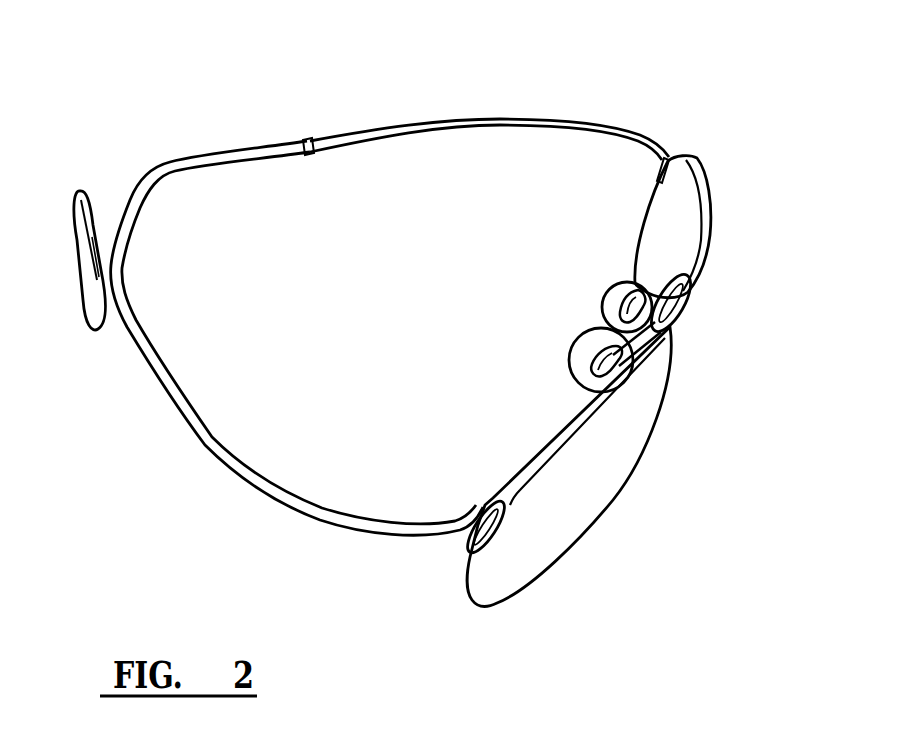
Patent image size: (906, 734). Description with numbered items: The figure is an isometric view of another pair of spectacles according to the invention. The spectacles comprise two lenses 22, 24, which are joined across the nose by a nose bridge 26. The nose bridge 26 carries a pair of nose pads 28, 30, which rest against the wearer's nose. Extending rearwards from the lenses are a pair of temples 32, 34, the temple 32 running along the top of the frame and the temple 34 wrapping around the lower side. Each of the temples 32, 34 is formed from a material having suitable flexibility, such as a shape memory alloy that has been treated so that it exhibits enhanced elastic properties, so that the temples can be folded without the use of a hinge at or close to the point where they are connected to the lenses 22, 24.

The lens 22 is at (572, 493).
The lens 24 is at (705, 213).
The nose bridge 26 is at (684, 308).
The nose pad 28 is at (610, 310).
The nose pad 30 is at (584, 379).
The temple 32 is at (440, 121).
The temple 34 is at (223, 457).